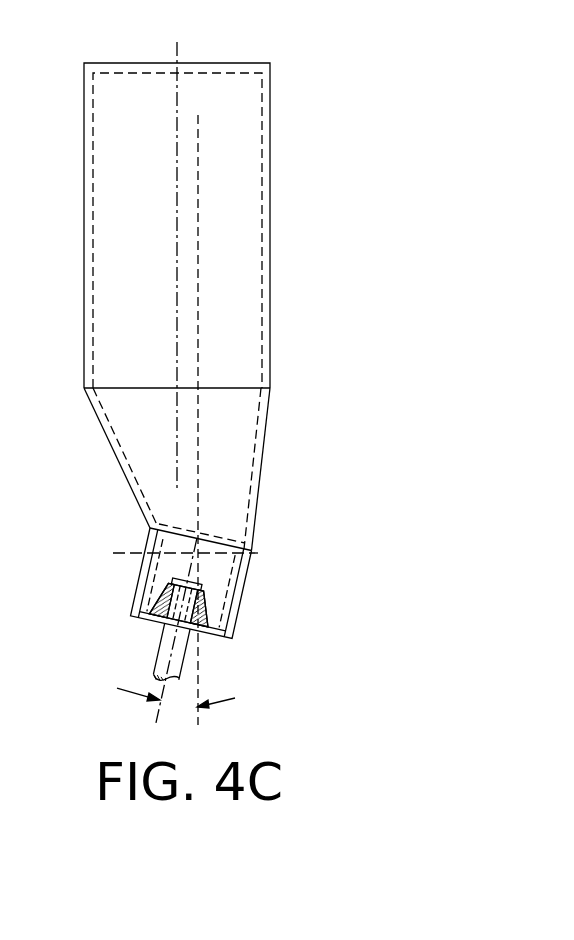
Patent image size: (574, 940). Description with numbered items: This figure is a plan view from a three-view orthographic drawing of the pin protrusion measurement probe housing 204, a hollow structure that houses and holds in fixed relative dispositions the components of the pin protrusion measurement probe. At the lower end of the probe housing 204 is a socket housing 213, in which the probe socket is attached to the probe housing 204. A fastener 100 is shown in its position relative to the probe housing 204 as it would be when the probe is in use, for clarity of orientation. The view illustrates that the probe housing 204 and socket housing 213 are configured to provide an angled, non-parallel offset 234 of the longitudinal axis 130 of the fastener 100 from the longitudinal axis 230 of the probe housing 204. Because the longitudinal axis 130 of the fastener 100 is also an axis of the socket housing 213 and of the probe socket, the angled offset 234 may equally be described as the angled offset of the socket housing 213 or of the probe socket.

The probe housing 204 is at (318, 85).
The longitudinal axis 230 is at (198, 207).
The socket housing 213 is at (258, 551).
The fastener 100 is at (156, 582).
The longitudinal axis 130 is at (156, 711).
The angled offset 234 is at (234, 706).